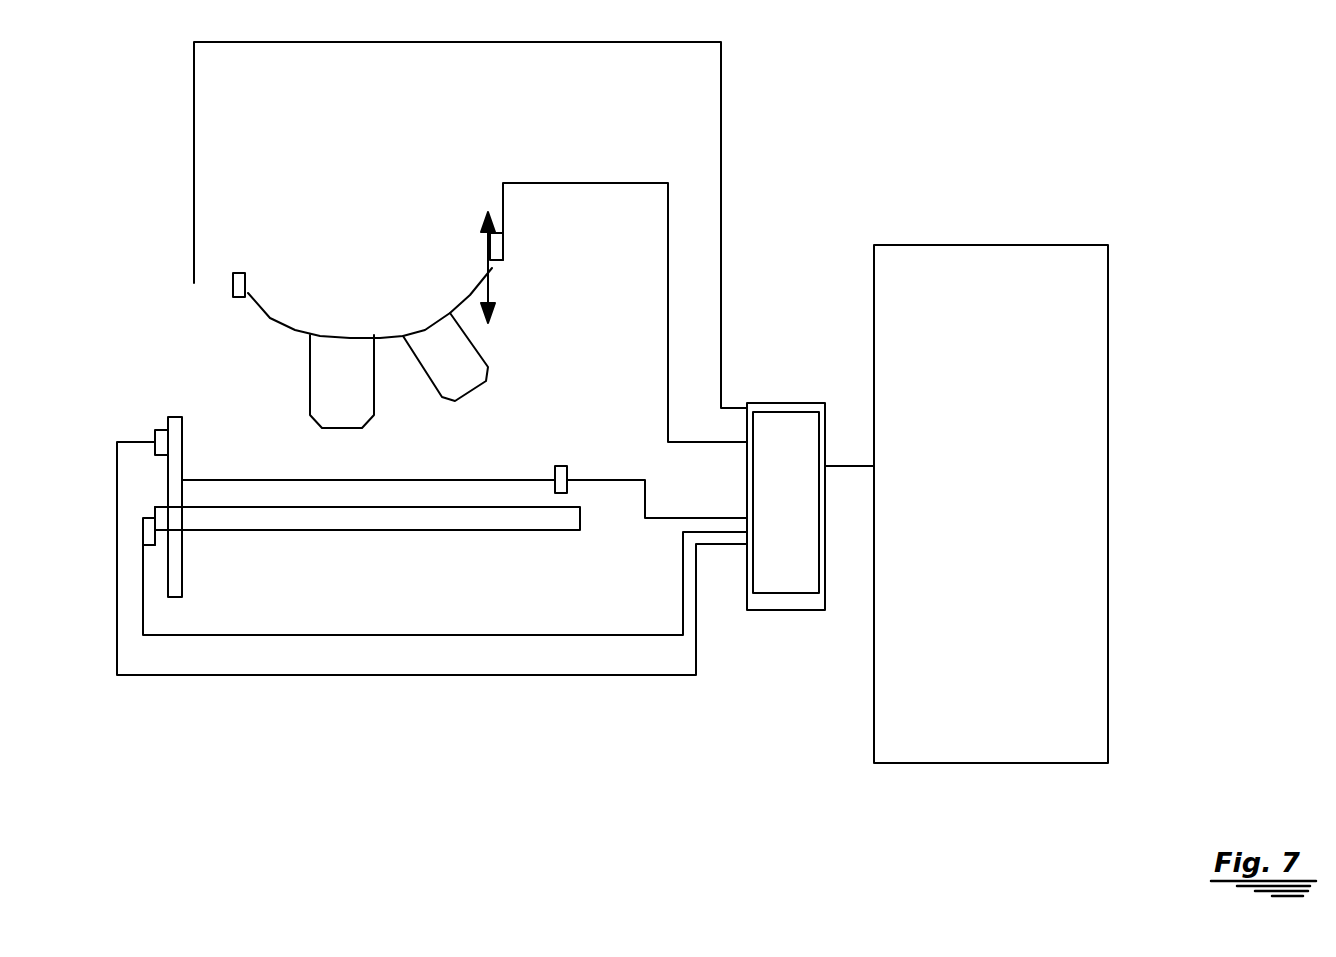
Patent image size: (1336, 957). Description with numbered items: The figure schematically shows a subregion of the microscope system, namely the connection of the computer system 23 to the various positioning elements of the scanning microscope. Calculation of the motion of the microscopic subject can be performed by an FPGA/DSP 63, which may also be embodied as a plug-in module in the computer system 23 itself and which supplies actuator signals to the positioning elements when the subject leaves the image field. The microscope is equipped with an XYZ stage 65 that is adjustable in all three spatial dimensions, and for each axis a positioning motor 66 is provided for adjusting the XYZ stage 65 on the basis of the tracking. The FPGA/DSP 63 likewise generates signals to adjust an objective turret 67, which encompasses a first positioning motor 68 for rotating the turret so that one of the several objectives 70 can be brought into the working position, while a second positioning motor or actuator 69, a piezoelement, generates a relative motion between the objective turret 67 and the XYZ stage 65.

The computer system 23 is at (949, 245).
The FPGA/DSP 63 is at (806, 522).
The XYZ stage 65 is at (362, 518).
The positioning motor 66 is at (157, 432).
The objective turret 67 is at (259, 313).
The first positioning motor 68 is at (231, 281).
The second positioning motor or actuator 69 is at (503, 246).
The objective 70 is at (442, 378).